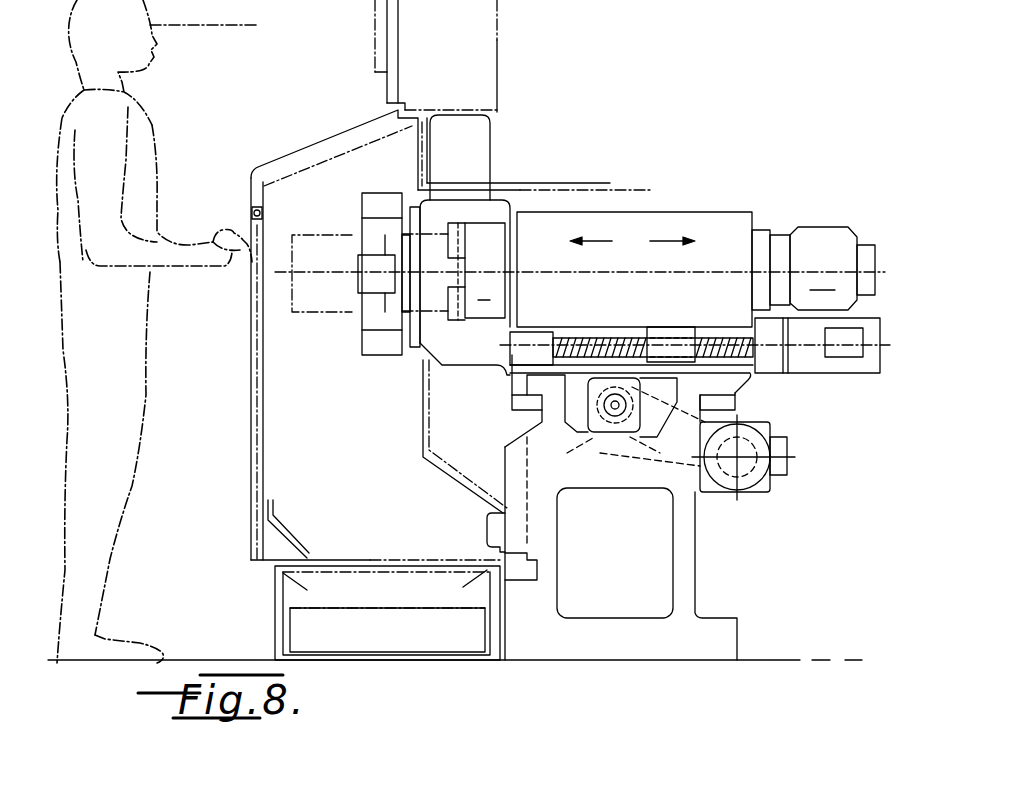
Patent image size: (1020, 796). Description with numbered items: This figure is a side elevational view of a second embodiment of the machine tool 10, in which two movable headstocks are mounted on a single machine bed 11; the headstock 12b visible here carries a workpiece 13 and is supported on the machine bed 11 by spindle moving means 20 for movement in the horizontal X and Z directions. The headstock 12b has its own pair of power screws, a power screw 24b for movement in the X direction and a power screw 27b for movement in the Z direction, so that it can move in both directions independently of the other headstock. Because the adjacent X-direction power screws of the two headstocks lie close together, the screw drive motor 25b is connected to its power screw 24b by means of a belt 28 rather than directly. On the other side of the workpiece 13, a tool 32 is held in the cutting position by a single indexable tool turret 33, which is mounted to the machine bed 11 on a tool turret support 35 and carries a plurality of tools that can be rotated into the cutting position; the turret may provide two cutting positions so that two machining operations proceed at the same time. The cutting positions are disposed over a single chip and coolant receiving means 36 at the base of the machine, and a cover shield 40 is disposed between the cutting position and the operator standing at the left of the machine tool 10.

The machine tool 10 is at (542, 186).
The cover shield 40 is at (264, 165).
The workpiece 13 is at (307, 238).
The tool turret 33 is at (382, 195).
The tool 32 is at (367, 280).
The tool turret support 35 is at (445, 348).
The headstock 12b is at (672, 213).
The power screw 27b is at (582, 340).
The spindle moving means 20 is at (748, 400).
The power screw 24b is at (612, 405).
The belt 28 is at (652, 455).
The screw drive motor 25b is at (760, 490).
The machine bed 11 is at (690, 545).
The chip and coolant receiving means 36 is at (270, 601).